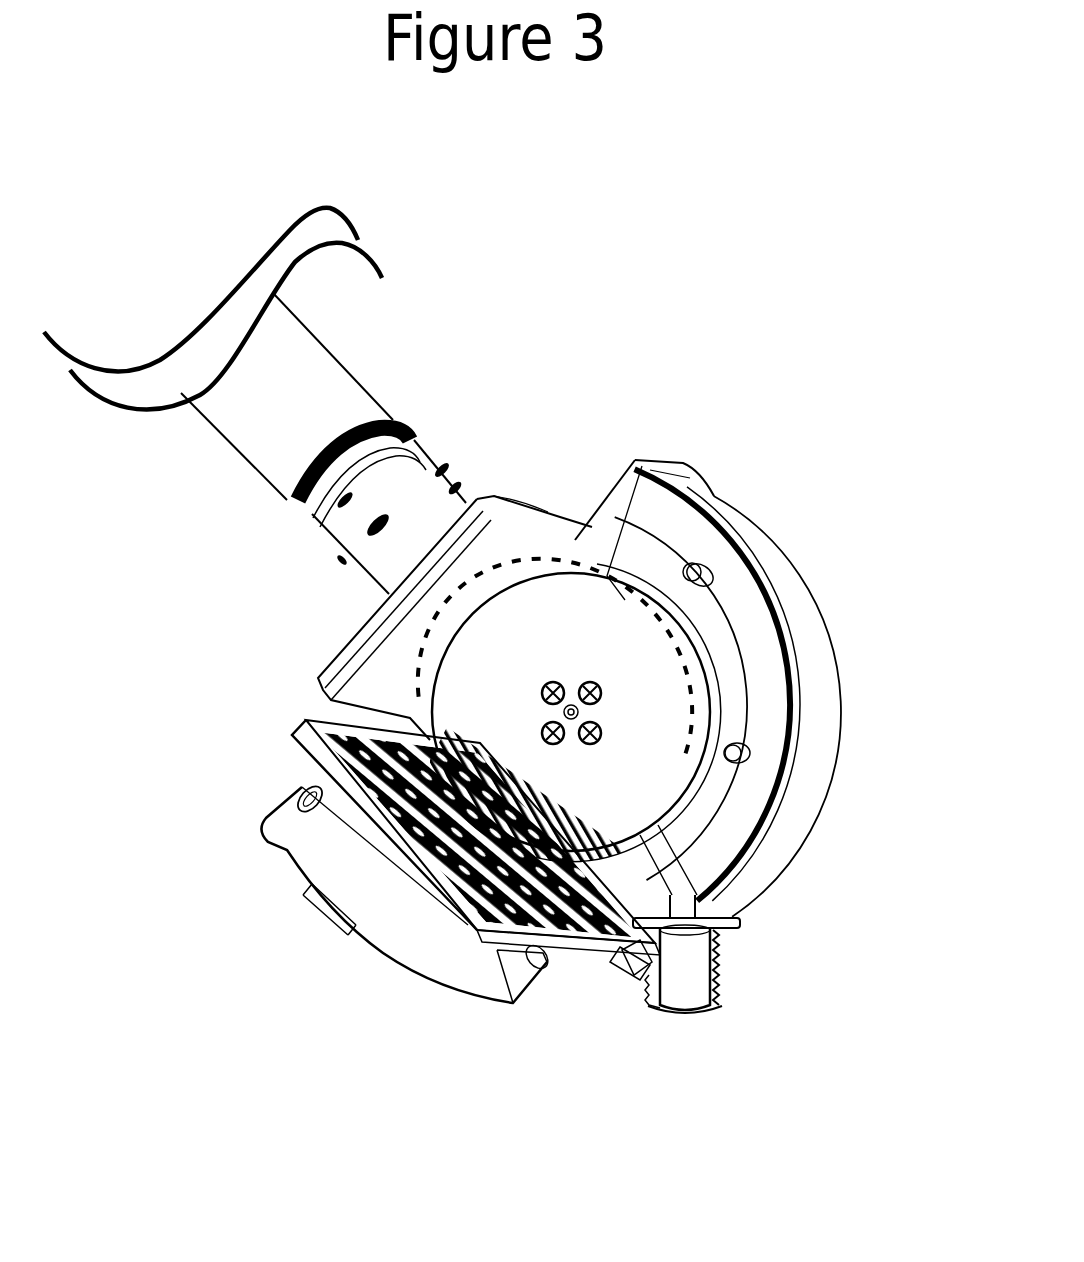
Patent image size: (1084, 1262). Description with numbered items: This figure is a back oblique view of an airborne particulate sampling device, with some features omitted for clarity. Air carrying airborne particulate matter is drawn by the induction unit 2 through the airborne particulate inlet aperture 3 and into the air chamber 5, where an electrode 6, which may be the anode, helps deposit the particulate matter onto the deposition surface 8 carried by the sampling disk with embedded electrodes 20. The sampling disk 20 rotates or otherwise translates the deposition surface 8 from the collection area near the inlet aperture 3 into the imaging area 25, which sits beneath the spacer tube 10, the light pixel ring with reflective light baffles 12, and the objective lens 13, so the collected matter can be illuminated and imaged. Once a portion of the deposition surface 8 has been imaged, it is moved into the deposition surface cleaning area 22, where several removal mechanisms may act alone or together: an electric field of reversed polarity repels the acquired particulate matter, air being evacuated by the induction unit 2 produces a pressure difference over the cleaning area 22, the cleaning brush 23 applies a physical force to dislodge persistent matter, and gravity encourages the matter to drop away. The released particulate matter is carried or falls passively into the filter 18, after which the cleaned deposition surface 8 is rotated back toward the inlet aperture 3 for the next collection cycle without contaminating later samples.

The induction unit 2 is at (385, 930).
The airborne particulate inlet aperture 3 is at (690, 987).
The air chamber 5 is at (730, 845).
The electrode 6 is at (733, 803).
The deposition surface 8 is at (707, 717).
The spacer tube 10 is at (307, 397).
The light pixel ring with reflective light baffles 12 is at (533, 547).
The objective lens 13 is at (417, 530).
The filter 18 is at (575, 945).
The sampling disk with embedded electrodes 20 is at (673, 637).
The deposition surface cleaning area 22 is at (480, 778).
The cleaning brush 23 is at (348, 800).
The imaging area 25 is at (473, 613).